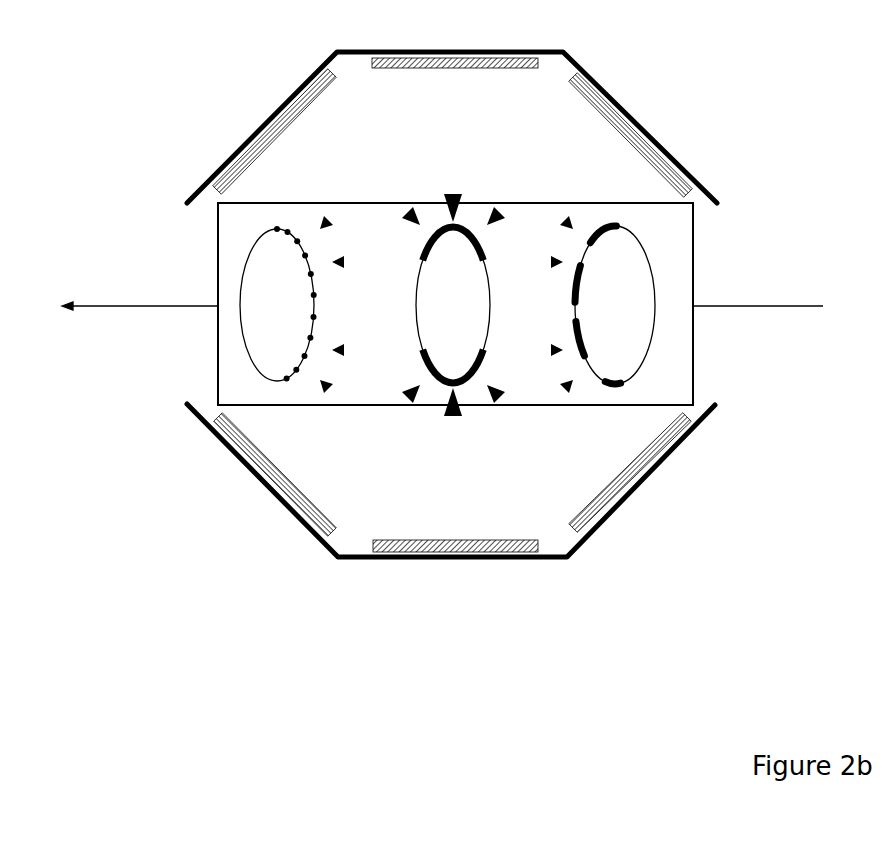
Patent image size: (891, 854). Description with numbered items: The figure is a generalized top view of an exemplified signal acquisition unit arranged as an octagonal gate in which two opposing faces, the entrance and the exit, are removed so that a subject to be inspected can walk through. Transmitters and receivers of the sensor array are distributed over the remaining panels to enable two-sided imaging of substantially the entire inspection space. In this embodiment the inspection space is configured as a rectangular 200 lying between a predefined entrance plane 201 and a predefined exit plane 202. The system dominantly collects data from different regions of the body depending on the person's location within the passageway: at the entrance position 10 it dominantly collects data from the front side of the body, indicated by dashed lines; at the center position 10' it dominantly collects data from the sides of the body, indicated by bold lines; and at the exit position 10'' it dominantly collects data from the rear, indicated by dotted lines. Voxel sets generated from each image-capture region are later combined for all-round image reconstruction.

The entrance position 10 is at (603, 304).
The center position 10' is at (453, 305).
The exit position 10'' is at (292, 304).
The rectangular inspection space 200 is at (363, 420).
The entrance plane 201 is at (767, 310).
The exit plane 202 is at (119, 309).